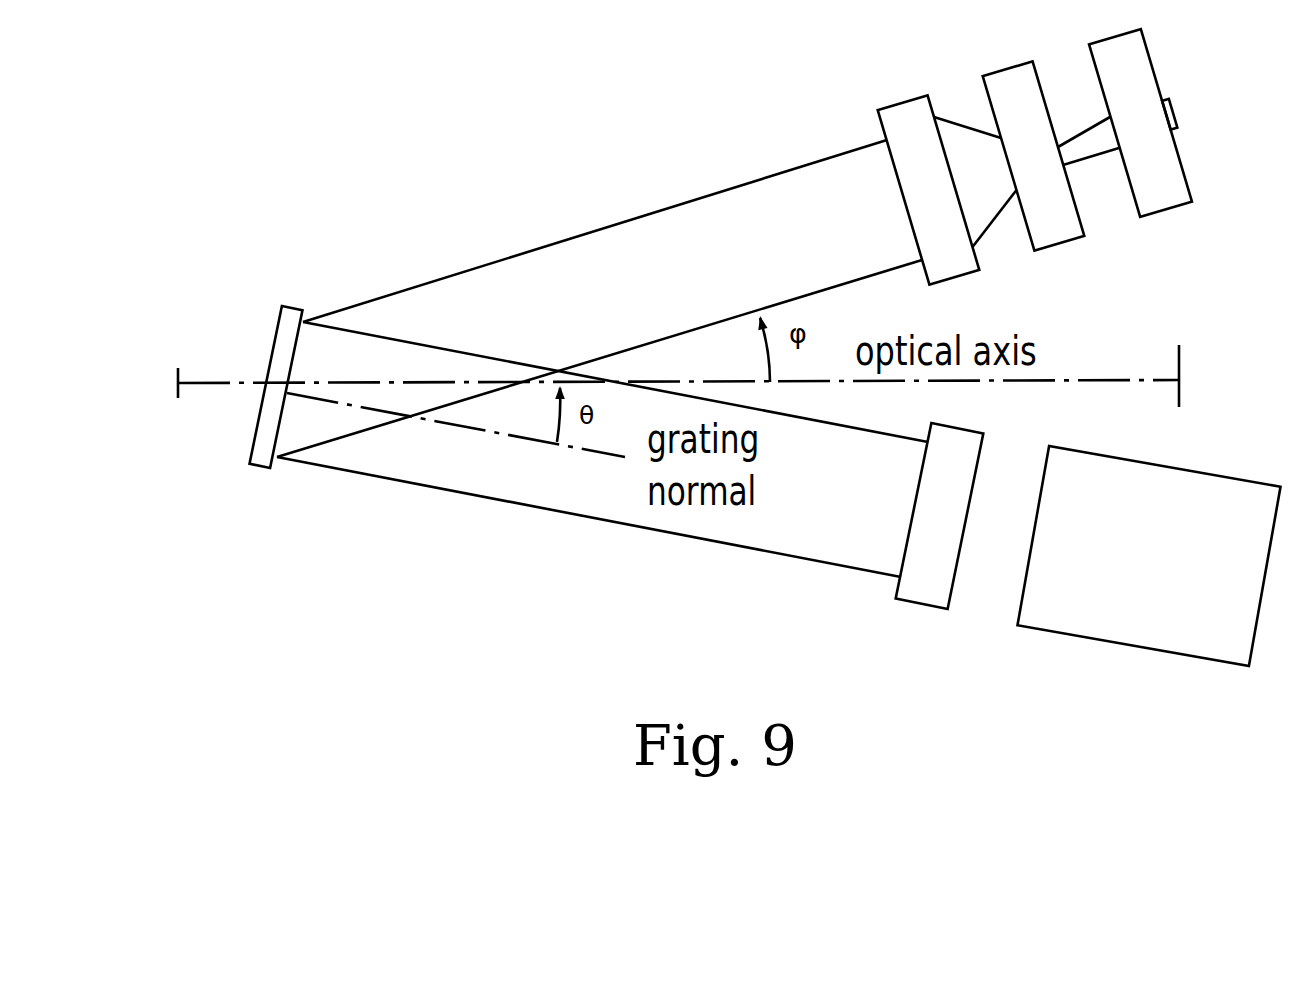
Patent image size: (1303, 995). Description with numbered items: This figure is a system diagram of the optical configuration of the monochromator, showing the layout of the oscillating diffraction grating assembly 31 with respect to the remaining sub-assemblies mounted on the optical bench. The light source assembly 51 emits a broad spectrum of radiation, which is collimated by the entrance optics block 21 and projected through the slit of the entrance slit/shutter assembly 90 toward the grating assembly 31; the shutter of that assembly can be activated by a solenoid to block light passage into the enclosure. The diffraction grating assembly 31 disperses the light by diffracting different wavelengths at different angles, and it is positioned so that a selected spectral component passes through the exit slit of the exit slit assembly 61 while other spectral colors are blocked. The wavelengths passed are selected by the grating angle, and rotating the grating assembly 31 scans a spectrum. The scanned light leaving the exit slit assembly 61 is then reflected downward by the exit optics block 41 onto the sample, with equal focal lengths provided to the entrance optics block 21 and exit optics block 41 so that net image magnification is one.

The diffraction grating assembly 31 is at (268, 350).
The entrance slit/shutter assembly 90 is at (968, 275).
The entrance optics block 21 is at (1068, 244).
The light source assembly 51 is at (1175, 207).
The exit slit assembly 61 is at (980, 452).
The exit optics block 41 is at (1148, 574).